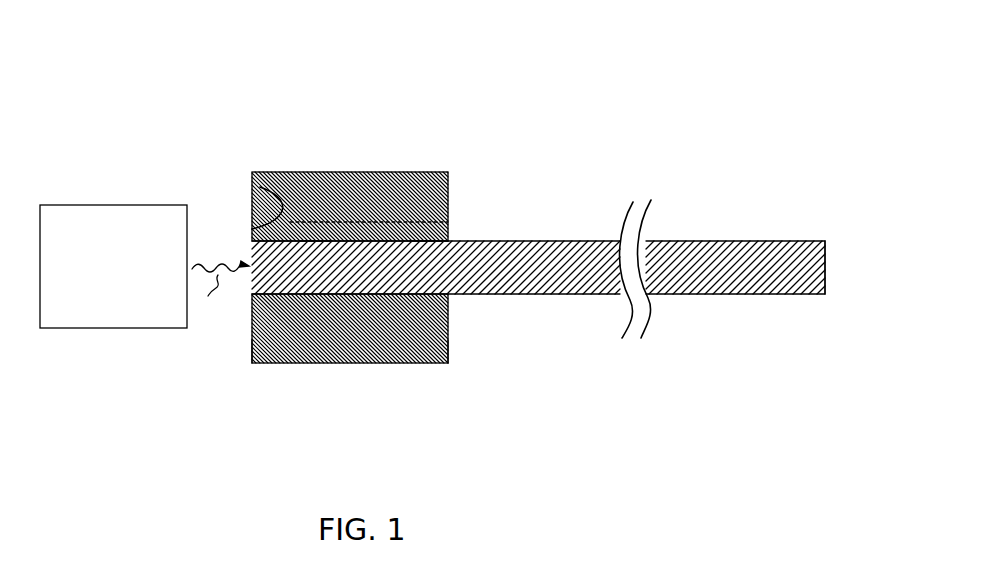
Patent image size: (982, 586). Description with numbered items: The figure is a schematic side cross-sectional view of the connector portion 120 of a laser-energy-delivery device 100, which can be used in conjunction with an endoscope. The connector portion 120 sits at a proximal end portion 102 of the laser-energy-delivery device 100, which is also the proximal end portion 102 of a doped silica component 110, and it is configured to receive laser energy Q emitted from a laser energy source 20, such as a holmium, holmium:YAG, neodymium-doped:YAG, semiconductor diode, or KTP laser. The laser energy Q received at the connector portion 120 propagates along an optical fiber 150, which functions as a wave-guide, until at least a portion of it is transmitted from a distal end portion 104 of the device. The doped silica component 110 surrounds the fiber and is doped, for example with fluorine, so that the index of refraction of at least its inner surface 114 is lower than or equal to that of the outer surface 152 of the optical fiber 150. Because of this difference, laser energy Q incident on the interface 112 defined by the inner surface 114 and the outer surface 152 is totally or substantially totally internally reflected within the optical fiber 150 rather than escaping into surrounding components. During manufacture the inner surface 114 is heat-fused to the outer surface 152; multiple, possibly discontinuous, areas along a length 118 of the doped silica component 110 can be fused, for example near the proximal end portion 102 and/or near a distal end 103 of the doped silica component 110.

The laser-energy-delivery device 100 is at (645, 60).
The laser energy source 20 is at (87, 214).
The laser energy Q is at (220, 293).
The connector portion 120 is at (489, 90).
The doped silica component 110 is at (433, 182).
The interface 112 is at (363, 305).
The inner surface 114 is at (313, 231).
The length 118 is at (254, 186).
The optical fiber 150 is at (550, 249).
The outer surface 152 is at (431, 248).
The distal end portion 104 is at (798, 339).
The proximal end portion 102 is at (227, 370).
The distal end 103 is at (456, 397).